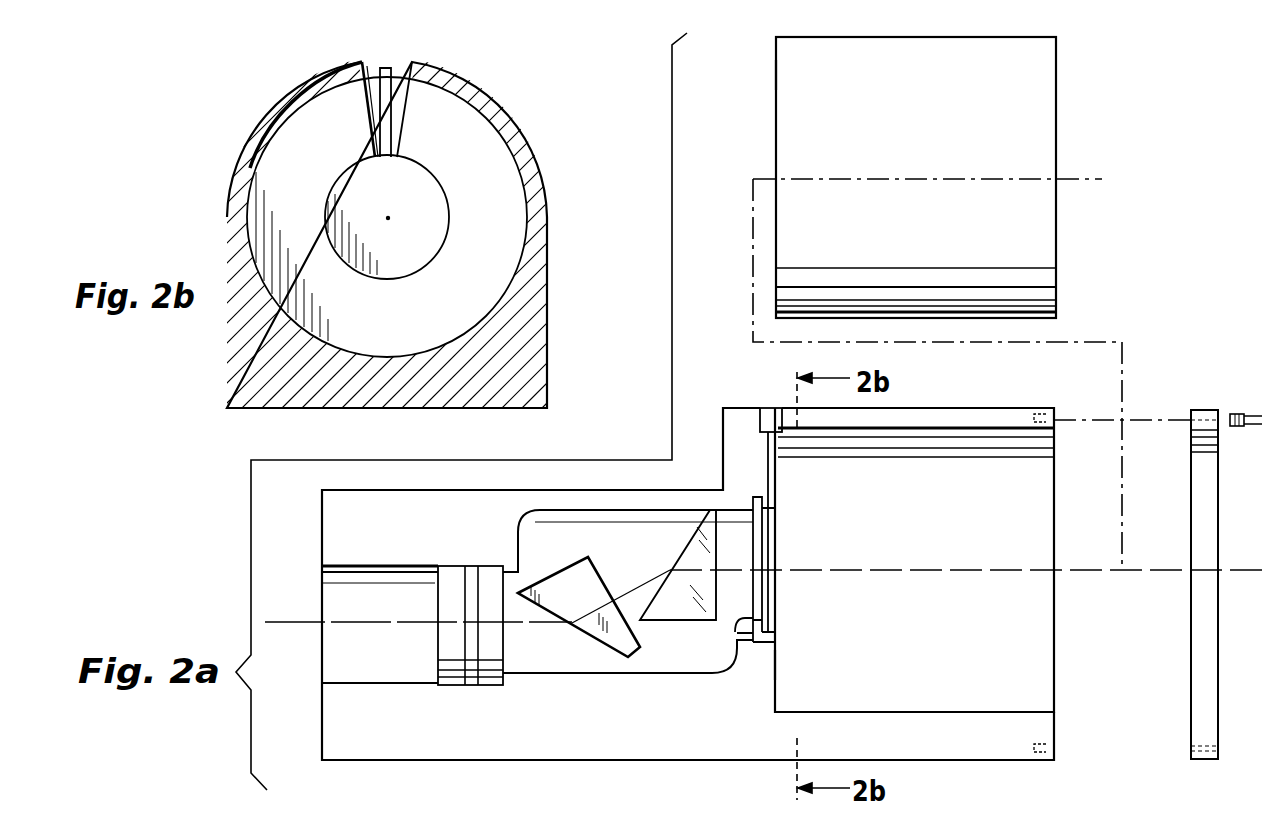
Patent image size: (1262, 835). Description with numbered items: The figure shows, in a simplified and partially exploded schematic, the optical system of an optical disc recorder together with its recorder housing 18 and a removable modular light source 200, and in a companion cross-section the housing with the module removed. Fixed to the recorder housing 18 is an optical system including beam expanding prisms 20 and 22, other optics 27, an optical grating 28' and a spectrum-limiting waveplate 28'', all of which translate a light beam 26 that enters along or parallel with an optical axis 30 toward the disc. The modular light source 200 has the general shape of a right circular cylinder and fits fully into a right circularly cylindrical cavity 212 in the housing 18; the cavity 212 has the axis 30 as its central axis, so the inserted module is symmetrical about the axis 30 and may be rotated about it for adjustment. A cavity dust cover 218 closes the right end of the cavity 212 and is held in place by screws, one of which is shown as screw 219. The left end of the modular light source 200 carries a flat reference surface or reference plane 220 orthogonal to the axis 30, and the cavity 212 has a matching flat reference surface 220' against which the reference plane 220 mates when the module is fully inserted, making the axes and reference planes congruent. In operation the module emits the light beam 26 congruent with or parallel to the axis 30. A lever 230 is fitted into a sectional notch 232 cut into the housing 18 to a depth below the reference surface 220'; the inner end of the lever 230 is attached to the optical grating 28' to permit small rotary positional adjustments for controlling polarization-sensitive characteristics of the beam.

In FIG. 2B, the recorder housing 18 is at (232, 338).
In FIG. 2A, the recorder housing 18 is at (322, 735).
In FIG. 2A, the beam expanding prism 20 is at (598, 633).
In FIG. 2A, the beam expanding prism 22 is at (683, 557).
In FIG. 2A, the light beam 26 is at (289, 622).
In FIG. 2A, the other optics 27 is at (460, 566).
In FIG. 2B, the optical grating 28' is at (408, 212).
In FIG. 2A, the optical grating 28' is at (791, 569).
In FIG. 2A, the spectrum-limiting waveplate 28'' is at (722, 640).
In FIG. 2B, the optical axis 30 is at (389, 218).
In FIG. 2A, the optical axis 30 is at (1095, 179).
In FIG. 2A, the modular light source 200 is at (1056, 76).
In FIG. 2B, the cavity 212 is at (503, 249).
In FIG. 2A, the cavity 212 is at (1034, 678).
In FIG. 2A, the cavity dust cover 218 is at (1191, 742).
In FIG. 2A, the screw 219 is at (1242, 416).
In FIG. 2A, the reference plane 220 is at (752, 73).
In FIG. 2B, the reference surface 220' is at (276, 115).
In FIG. 2A, the reference surface 220' is at (745, 684).
In FIG. 2B, the lever 230 is at (373, 66).
In FIG. 2A, the lever 230 is at (777, 483).
In FIG. 2B, the sectional notch 232 is at (402, 76).
In FIG. 2A, the sectional notch 232 is at (770, 420).